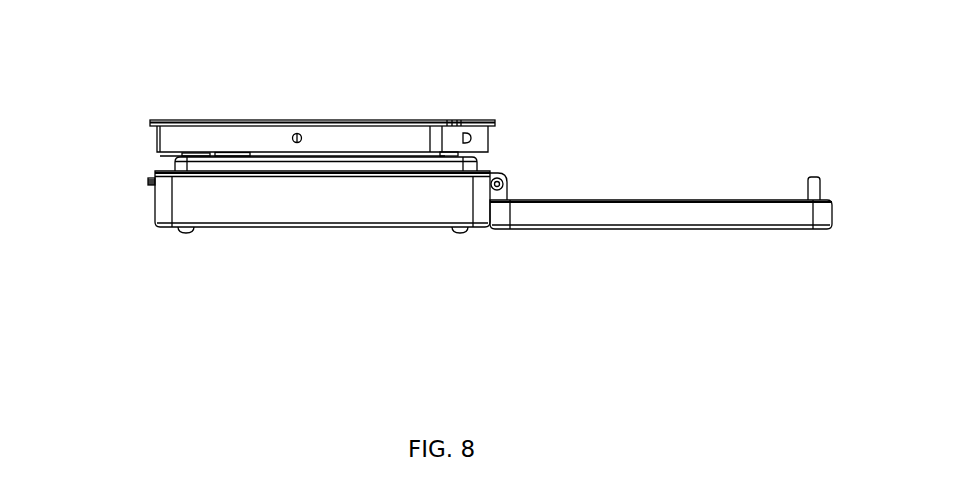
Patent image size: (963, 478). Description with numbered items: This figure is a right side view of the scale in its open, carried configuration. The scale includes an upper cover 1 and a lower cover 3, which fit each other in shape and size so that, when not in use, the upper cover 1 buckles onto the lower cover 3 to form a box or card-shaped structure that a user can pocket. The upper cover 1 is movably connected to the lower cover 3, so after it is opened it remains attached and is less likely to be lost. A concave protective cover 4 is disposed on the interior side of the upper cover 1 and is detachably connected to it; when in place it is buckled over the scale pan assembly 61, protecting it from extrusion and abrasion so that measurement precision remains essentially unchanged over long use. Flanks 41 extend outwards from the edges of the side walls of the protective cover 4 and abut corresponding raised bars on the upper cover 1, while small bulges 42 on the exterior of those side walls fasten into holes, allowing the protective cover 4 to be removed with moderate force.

The upper cover 1 is at (583, 217).
The lower cover 3 is at (245, 208).
The protective cover 4 is at (168, 128).
The flanks 41 is at (325, 120).
The bulges 42 is at (297, 128).
The scale pan assembly 61 is at (180, 155).